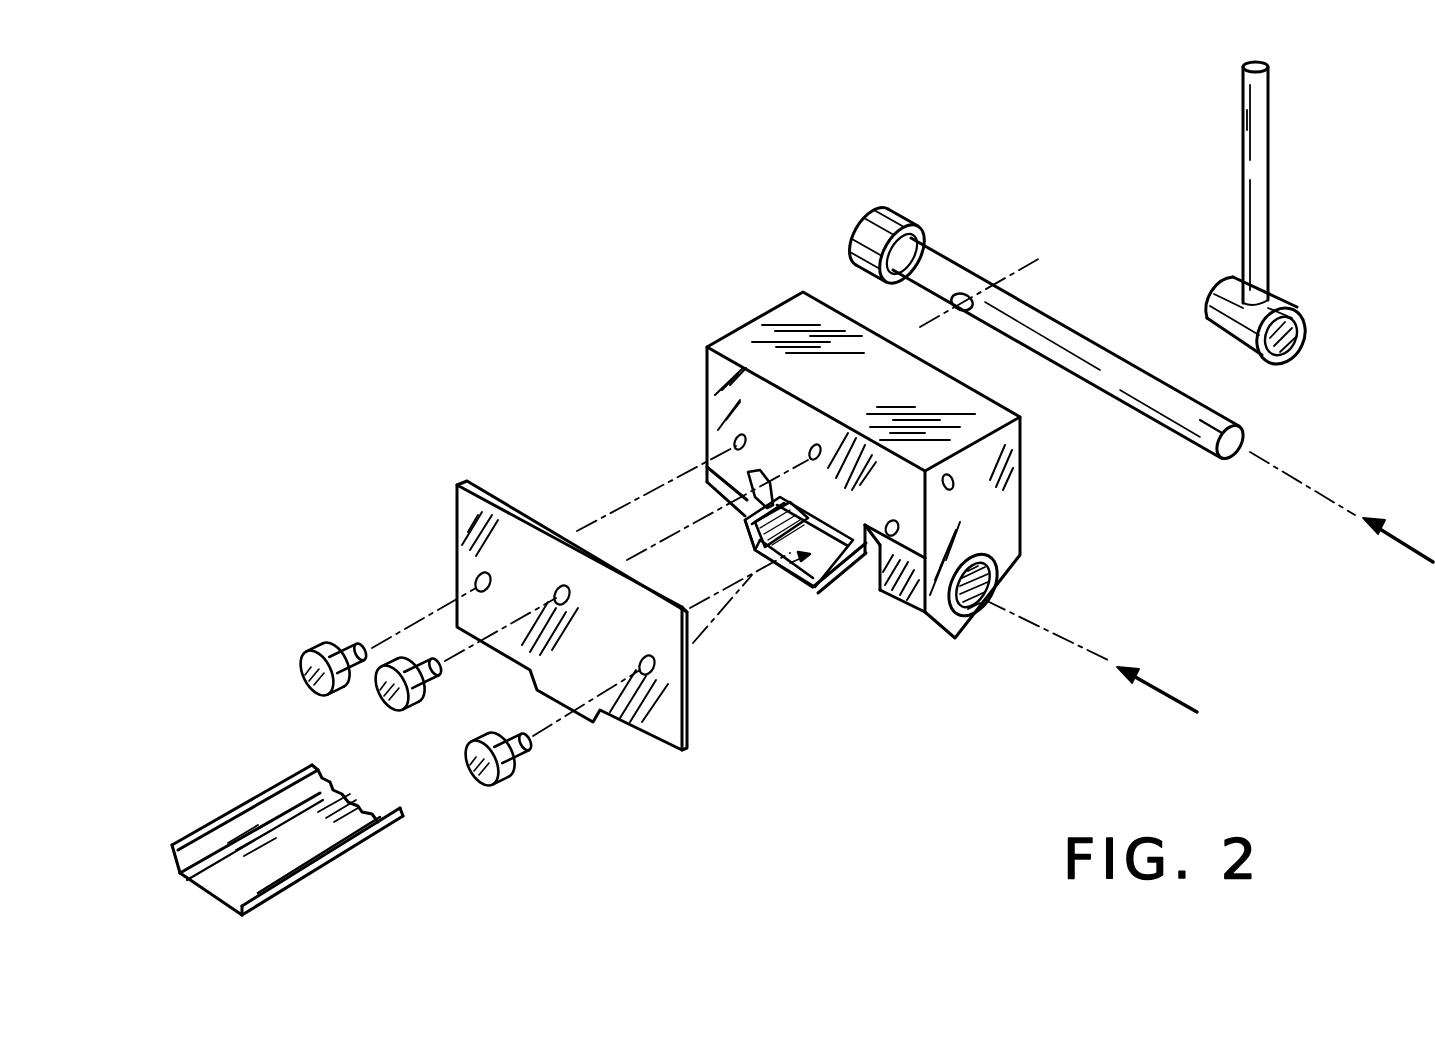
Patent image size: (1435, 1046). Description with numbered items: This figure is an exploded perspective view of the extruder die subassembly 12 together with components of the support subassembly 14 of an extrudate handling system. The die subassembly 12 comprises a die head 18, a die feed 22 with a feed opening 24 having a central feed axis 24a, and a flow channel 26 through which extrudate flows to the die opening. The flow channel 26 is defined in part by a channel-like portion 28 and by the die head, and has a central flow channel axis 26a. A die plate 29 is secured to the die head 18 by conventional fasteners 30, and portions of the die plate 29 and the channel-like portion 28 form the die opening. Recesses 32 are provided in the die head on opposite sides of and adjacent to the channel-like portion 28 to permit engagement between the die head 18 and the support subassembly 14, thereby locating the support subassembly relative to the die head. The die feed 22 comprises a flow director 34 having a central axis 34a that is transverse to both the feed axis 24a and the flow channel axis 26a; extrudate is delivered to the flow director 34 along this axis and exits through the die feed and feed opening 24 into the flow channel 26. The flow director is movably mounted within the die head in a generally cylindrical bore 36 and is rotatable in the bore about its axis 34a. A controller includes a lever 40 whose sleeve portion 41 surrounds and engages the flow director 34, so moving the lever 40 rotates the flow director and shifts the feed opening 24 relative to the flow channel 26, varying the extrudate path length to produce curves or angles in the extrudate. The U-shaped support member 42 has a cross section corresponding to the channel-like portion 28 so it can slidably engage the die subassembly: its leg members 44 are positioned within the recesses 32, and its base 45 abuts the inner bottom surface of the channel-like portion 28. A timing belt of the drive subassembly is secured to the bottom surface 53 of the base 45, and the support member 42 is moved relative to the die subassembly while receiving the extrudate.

The extruder die subassembly 12 is at (857, 698).
The support subassembly 14 is at (405, 856).
The die head 18 is at (1015, 457).
The die feed 22 is at (940, 268).
The feed opening 24 is at (948, 303).
The central feed axis 24a is at (1042, 258).
The flow channel 26 is at (760, 588).
The central flow channel axis 26a is at (802, 543).
The channel-like portion 28 is at (748, 547).
The die plate 29 is at (662, 710).
The fasteners 30 is at (498, 782).
The recesses 32 is at (718, 508).
The flow director 34 is at (1195, 437).
The central flow director axis 34a is at (1263, 460).
The cylindrical bore 36 is at (1012, 560).
The lever 40 is at (1268, 197).
The sleeve portion 41 is at (1307, 307).
The support member 42 is at (333, 860).
The leg members 44 is at (172, 848).
The base 45 is at (230, 876).
The bottom surface 53 is at (270, 900).